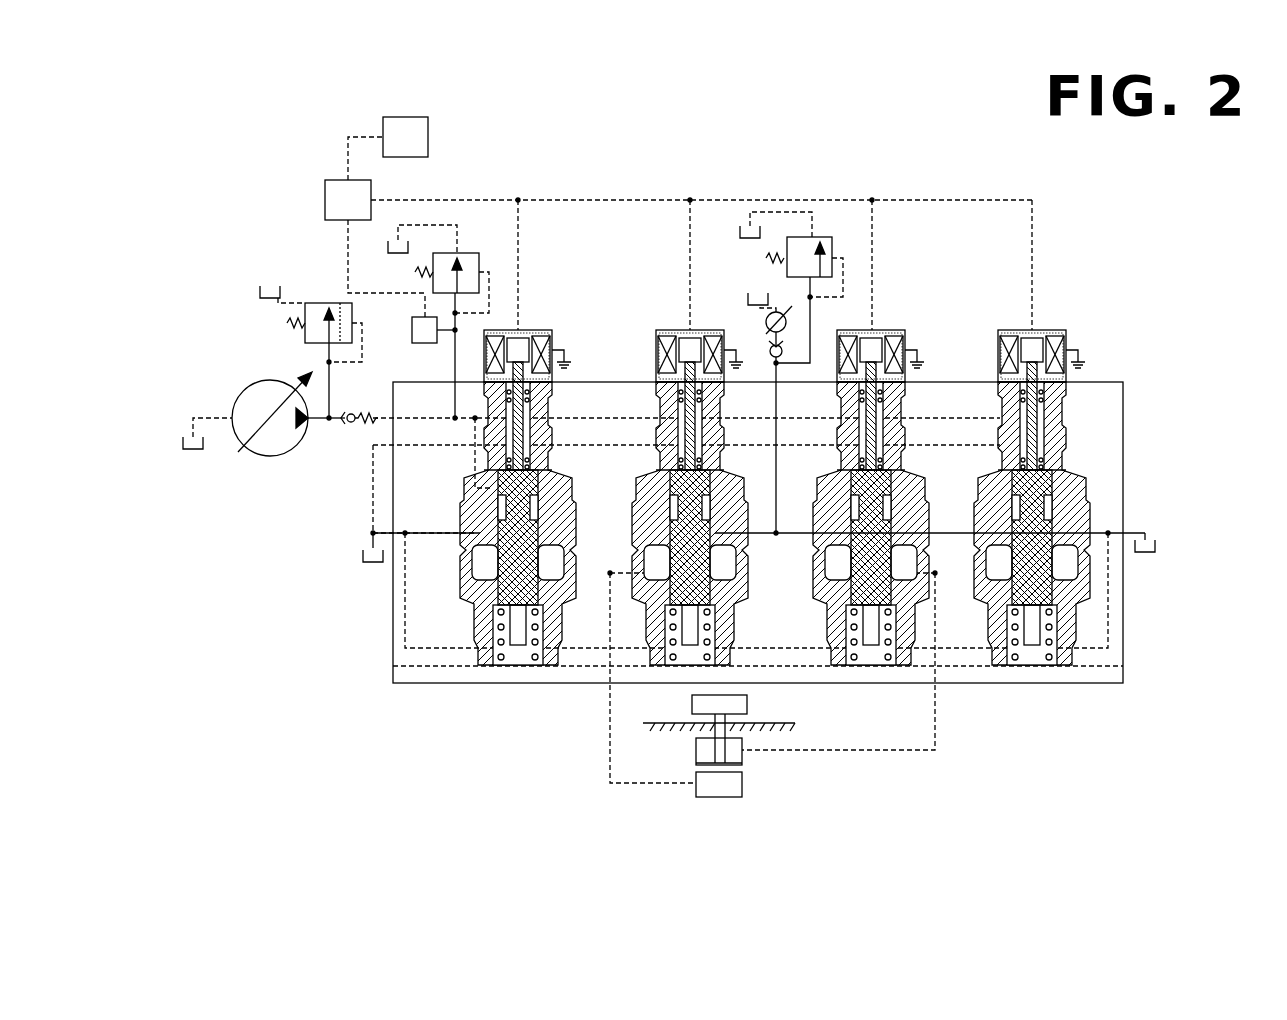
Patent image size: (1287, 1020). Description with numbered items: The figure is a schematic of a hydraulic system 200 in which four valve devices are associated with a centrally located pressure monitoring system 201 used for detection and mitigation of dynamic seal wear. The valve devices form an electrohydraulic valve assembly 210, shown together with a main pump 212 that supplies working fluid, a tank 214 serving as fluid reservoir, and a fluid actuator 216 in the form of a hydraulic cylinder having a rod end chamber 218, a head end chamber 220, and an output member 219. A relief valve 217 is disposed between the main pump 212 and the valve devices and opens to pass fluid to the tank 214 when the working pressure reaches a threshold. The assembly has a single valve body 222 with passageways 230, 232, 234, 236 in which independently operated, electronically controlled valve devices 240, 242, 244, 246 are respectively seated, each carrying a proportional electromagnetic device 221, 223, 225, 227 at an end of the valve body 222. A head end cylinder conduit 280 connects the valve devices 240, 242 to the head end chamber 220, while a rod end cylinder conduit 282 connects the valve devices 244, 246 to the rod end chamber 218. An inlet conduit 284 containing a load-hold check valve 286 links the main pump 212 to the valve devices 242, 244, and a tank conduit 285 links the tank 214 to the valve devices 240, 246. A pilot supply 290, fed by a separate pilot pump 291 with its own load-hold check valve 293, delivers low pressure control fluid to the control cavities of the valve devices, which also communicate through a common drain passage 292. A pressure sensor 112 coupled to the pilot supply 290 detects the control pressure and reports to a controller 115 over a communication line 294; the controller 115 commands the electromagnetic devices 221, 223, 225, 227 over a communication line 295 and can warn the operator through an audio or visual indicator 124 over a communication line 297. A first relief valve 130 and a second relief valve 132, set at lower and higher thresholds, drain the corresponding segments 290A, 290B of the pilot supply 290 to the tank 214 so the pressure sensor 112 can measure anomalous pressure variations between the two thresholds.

The hydraulic system 200 is at (753, 130).
The pressure monitoring system 201 is at (246, 508).
The electrohydraulic valve assembly 210 is at (930, 316).
The pressure sensor 112 is at (424, 344).
The controller 115 is at (348, 200).
The audio and/or visual indicator 124 is at (405, 137).
The first relief valve 130 is at (305, 335).
The second relief valve 132 is at (460, 252).
The main pump 212 is at (794, 290).
The tank 214 is at (395, 258).
The fluid actuator 216 is at (752, 801).
The relief valve 217 is at (824, 240).
The rod end chamber 218 is at (745, 756).
The output member 219 is at (719, 704).
The head end chamber 220 is at (719, 784).
The proportional electromagnetic device 221 is at (546, 335).
The valve body 222 is at (573, 363).
The proportional electromagnetic device 223 is at (718, 352).
The proportional electromagnetic device 225 is at (906, 348).
The proportional electromagnetic device 227 is at (1068, 348).
The passageway 230 is at (498, 455).
The passageway 232 is at (700, 430).
The passageway 234 is at (858, 422).
The passageway 236 is at (1062, 410).
The cylinder-to-tank head end metering valve device 240 is at (511, 465).
The pump-to-cylinder head end metering valve device 242 is at (699, 463).
The pump-to-cylinder rod end metering valve device 244 is at (876, 463).
The cylinder-to-tank rod end metering valve device 246 is at (1053, 463).
The head end cylinder conduit 280 is at (609, 735).
The rod end cylinder conduit 282 is at (937, 725).
The inlet conduit 284 is at (779, 382).
The tank conduit 285 is at (450, 530).
The load-hold check valve 286 is at (786, 350).
The pilot supply 290 is at (408, 418).
The segment of the pilot supply 290A is at (314, 430).
The segment of the pilot supply 290B is at (446, 420).
The pilot pump 291 is at (243, 398).
The common drain passage 292 is at (577, 440).
The load-hold check valve 293 is at (352, 428).
The communication line 294 is at (345, 242).
The communication line 295 is at (582, 196).
The communication line 297 is at (350, 131).